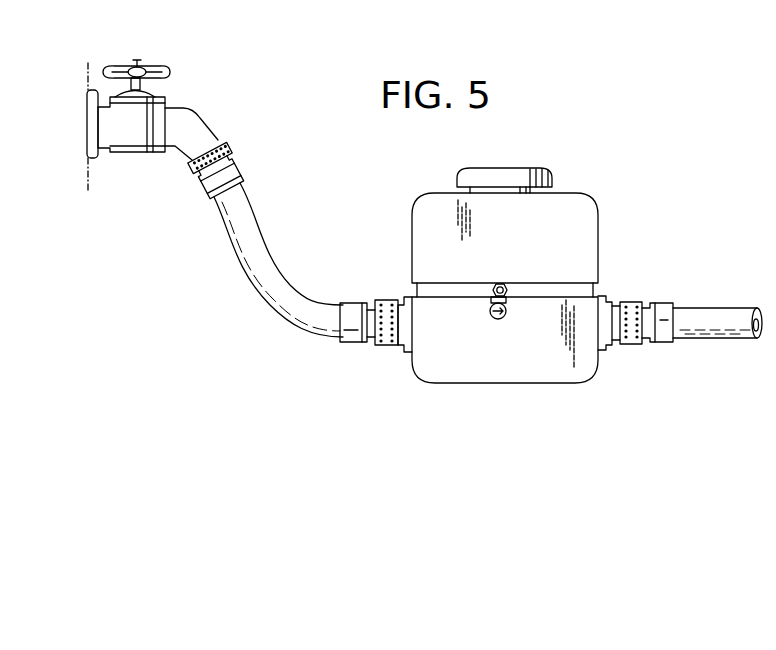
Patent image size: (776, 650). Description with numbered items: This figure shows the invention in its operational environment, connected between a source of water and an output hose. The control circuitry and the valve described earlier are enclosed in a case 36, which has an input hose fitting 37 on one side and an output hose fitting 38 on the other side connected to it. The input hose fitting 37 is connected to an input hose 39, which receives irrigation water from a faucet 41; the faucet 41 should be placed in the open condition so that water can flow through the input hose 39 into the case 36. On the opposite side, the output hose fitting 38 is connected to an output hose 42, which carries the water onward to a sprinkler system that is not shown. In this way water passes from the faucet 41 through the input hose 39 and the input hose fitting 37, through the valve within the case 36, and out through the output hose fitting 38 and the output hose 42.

The case 36 is at (598, 260).
The input hose fitting 37 is at (393, 300).
The output hose fitting 38 is at (613, 338).
The input hose 39 is at (286, 273).
The faucet 41 is at (193, 128).
The output hose 42 is at (733, 312).